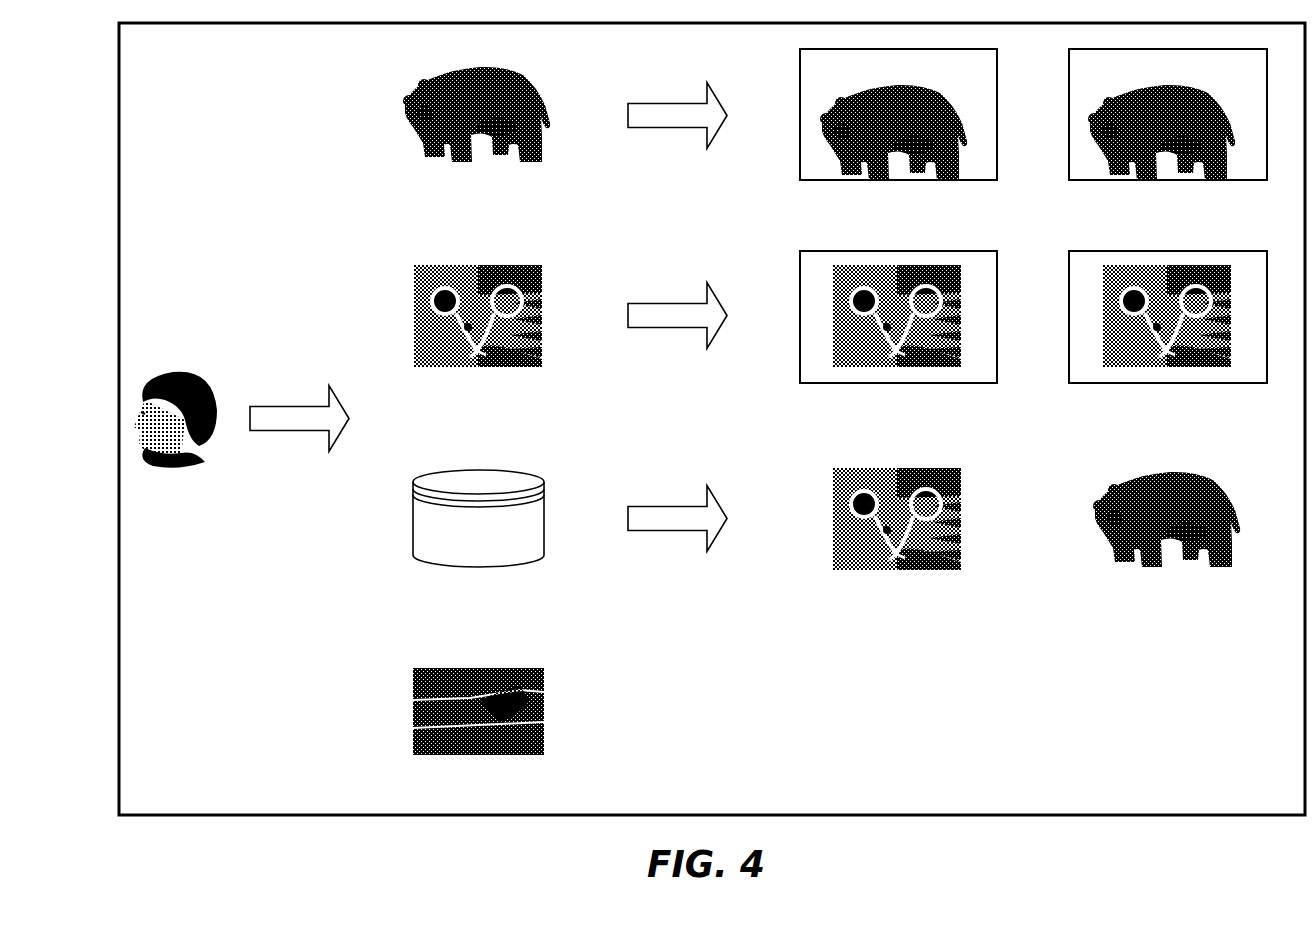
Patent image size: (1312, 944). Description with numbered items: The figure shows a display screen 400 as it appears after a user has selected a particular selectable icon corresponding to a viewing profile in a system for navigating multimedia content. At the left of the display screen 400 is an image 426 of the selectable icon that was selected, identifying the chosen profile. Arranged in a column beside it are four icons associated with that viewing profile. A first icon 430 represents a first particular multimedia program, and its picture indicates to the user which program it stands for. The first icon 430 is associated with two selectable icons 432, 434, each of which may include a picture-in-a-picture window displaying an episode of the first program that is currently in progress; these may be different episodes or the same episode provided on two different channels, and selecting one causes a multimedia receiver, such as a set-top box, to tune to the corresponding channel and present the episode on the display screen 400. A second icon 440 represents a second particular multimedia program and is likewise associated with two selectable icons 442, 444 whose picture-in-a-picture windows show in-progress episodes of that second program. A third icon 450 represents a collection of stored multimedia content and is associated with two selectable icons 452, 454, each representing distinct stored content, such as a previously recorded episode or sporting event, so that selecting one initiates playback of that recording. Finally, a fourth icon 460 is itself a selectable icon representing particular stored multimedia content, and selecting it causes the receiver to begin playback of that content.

The display screen 400 is at (185, 66).
The image 426 is at (175, 432).
The first icon 430 is at (476, 129).
The selectable icon 432 is at (898, 139).
The selectable icon 434 is at (1168, 139).
The second icon 440 is at (478, 330).
The selectable icon 442 is at (898, 348).
The selectable icon 444 is at (1168, 348).
The third icon 450 is at (478, 538).
The selectable icon 452 is at (897, 554).
The selectable icon 454 is at (1166, 556).
The fourth icon 460 is at (478, 725).